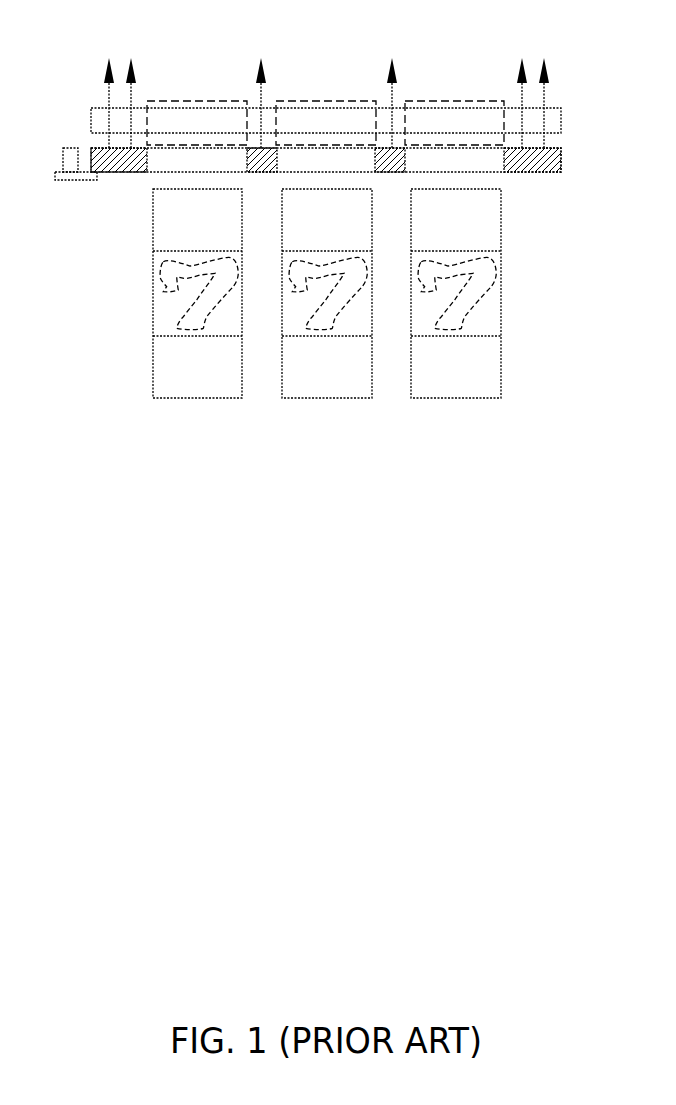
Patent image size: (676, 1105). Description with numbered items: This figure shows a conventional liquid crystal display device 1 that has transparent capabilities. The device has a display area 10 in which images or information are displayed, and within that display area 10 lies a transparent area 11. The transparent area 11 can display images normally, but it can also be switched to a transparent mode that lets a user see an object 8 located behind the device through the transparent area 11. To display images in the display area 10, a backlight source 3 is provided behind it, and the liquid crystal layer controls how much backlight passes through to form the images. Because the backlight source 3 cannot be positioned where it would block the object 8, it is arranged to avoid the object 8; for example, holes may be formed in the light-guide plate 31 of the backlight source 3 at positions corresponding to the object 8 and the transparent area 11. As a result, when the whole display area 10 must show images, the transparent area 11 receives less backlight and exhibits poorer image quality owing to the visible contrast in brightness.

The liquid crystal display device 1 is at (550, 120).
The backlight source 3 is at (52, 145).
The object 8 is at (487, 367).
The display area 10 is at (562, 60).
The transparent area 11 is at (492, 100).
The light-guide plate 31 is at (560, 162).